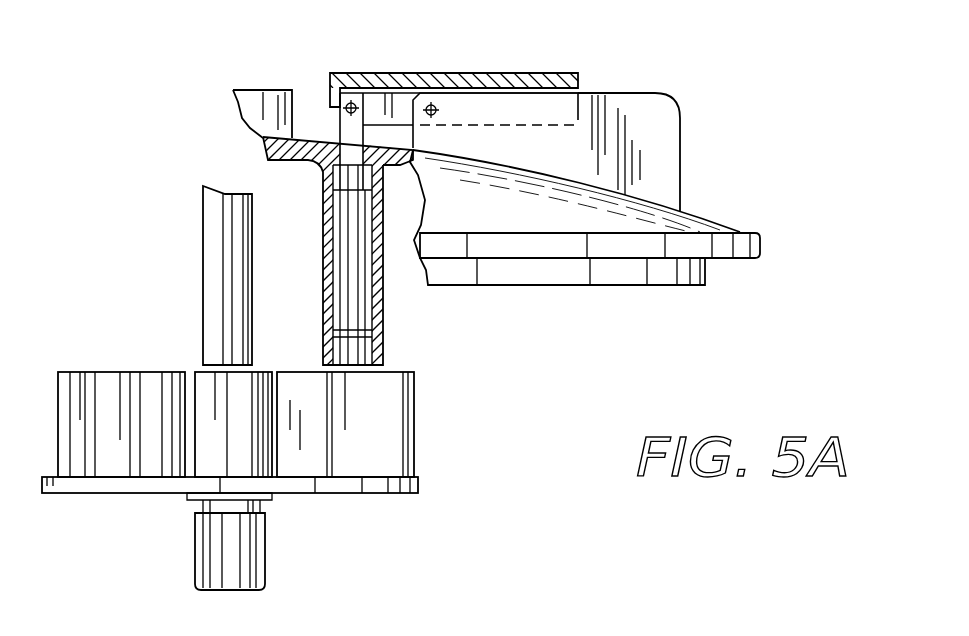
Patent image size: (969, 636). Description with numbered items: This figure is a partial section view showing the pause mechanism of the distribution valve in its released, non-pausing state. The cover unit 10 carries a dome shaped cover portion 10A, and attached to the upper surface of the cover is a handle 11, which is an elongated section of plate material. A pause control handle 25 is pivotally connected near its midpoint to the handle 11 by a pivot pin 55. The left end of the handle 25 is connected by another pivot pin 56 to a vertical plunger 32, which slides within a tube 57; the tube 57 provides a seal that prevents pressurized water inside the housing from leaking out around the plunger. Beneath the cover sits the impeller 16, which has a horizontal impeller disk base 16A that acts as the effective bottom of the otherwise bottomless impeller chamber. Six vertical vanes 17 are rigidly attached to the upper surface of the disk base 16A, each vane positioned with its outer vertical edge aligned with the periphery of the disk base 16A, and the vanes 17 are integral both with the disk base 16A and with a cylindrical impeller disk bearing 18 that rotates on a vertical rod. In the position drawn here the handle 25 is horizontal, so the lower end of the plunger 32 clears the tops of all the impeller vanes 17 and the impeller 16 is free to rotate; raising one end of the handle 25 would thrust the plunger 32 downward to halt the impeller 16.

The cover unit 10 is at (705, 293).
The dome shaped cover portion 10A is at (750, 244).
The handle 11 is at (670, 137).
The impeller 16 is at (418, 427).
The impeller disk base 16A is at (340, 483).
The vertical vanes 17 is at (137, 372).
The cylindrical impeller disk bearing 18 is at (212, 217).
The handle 25 is at (545, 72).
The vertical plunger 32 is at (343, 213).
The pivot pin 55 is at (435, 108).
The pivot pin 56 is at (335, 108).
The tube 57 is at (387, 293).